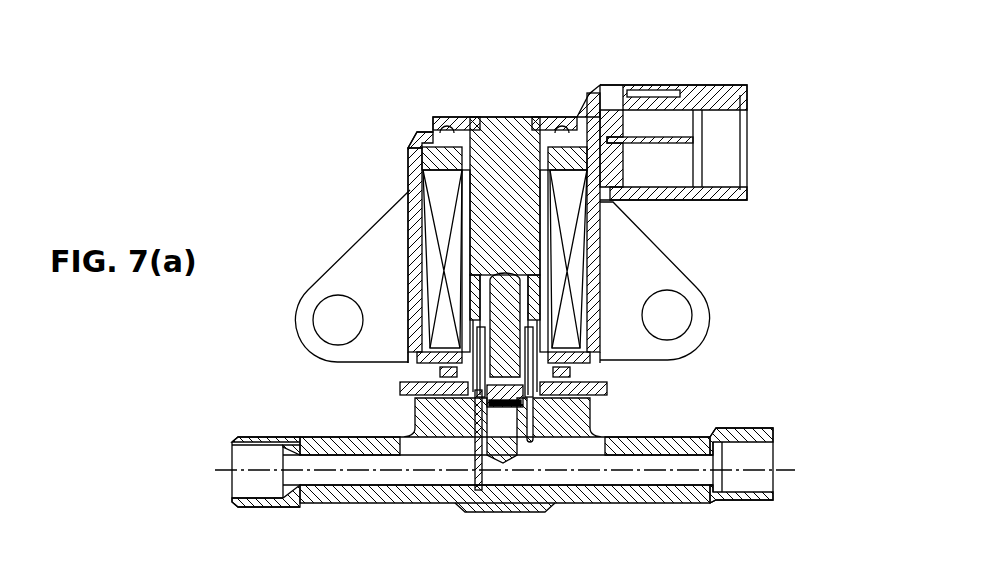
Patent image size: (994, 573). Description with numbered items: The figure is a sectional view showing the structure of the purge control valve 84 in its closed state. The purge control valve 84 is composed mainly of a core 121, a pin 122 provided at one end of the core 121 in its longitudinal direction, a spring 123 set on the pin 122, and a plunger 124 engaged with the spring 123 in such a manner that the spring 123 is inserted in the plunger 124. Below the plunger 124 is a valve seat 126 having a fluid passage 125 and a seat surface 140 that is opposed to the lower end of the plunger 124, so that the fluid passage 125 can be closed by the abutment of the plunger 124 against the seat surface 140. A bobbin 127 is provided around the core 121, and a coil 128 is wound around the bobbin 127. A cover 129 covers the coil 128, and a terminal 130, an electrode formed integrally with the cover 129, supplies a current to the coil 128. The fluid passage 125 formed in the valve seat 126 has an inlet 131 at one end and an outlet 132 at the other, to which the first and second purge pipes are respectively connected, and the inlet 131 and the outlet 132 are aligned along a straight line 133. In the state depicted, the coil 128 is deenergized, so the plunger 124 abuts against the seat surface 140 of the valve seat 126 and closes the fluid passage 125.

The purge control valve 84 is at (302, 148).
The core 121 is at (505, 152).
The pin 122 is at (590, 270).
The spring 123 is at (590, 297).
The plunger 124 is at (590, 347).
The fluid passage 125 is at (621, 487).
The valve seat 126 is at (645, 402).
The bobbin 127 is at (411, 162).
The coil 128 is at (438, 209).
The cover 129 is at (598, 100).
The terminal 130 is at (694, 137).
The inlet 131 is at (235, 483).
The outlet 132 is at (756, 487).
The straight line 133 is at (799, 463).
The seat surface 140 is at (485, 398).